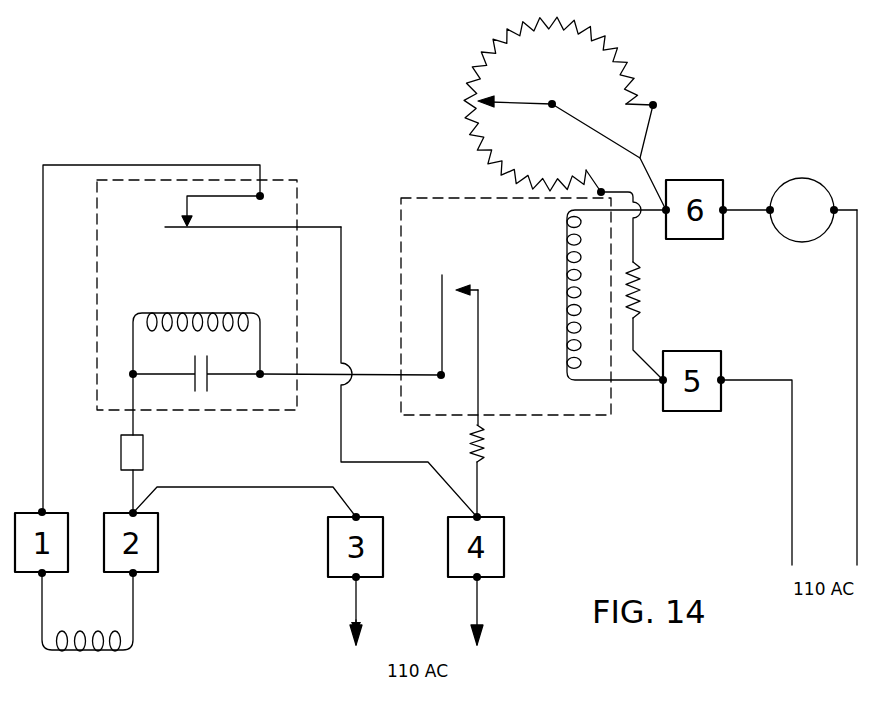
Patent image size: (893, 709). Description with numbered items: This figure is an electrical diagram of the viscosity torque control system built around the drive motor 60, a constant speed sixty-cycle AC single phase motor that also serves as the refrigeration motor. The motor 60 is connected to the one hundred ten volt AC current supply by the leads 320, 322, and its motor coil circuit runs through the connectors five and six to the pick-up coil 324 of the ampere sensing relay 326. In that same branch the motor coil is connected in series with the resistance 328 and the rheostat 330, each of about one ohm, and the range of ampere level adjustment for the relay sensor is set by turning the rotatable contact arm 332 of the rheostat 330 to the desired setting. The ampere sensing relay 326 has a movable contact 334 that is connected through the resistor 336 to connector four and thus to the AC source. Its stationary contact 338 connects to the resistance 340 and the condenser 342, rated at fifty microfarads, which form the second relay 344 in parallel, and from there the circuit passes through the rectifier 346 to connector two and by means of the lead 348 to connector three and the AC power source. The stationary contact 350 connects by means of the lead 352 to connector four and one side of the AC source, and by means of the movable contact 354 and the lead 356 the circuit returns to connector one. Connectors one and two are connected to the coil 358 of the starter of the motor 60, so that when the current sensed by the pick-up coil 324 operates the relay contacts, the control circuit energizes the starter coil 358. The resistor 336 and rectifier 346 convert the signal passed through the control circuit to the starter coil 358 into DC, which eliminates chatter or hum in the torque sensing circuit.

The drive motor 60 is at (778, 235).
The lead 320 is at (790, 448).
The lead 322 is at (855, 322).
The pick-up coil 324 is at (564, 342).
The ampere sensing relay 326 is at (568, 417).
The resistance 328 is at (643, 290).
The rheostat 330 is at (632, 70).
The rotatable contact arm 332 is at (515, 101).
The movable contact 334 is at (481, 341).
The resistor 336 is at (485, 452).
The stationary contact 338 is at (442, 290).
The resistance 340 is at (176, 313).
The condenser 342 is at (211, 383).
The second relay 344 is at (92, 350).
The rectifier 346 is at (144, 453).
The lead 348 is at (256, 490).
The stationary contact 350 is at (222, 230).
The lead 352 is at (343, 331).
The movable contact 354 is at (207, 199).
The lead 356 is at (47, 312).
The coil 358 is at (92, 652).